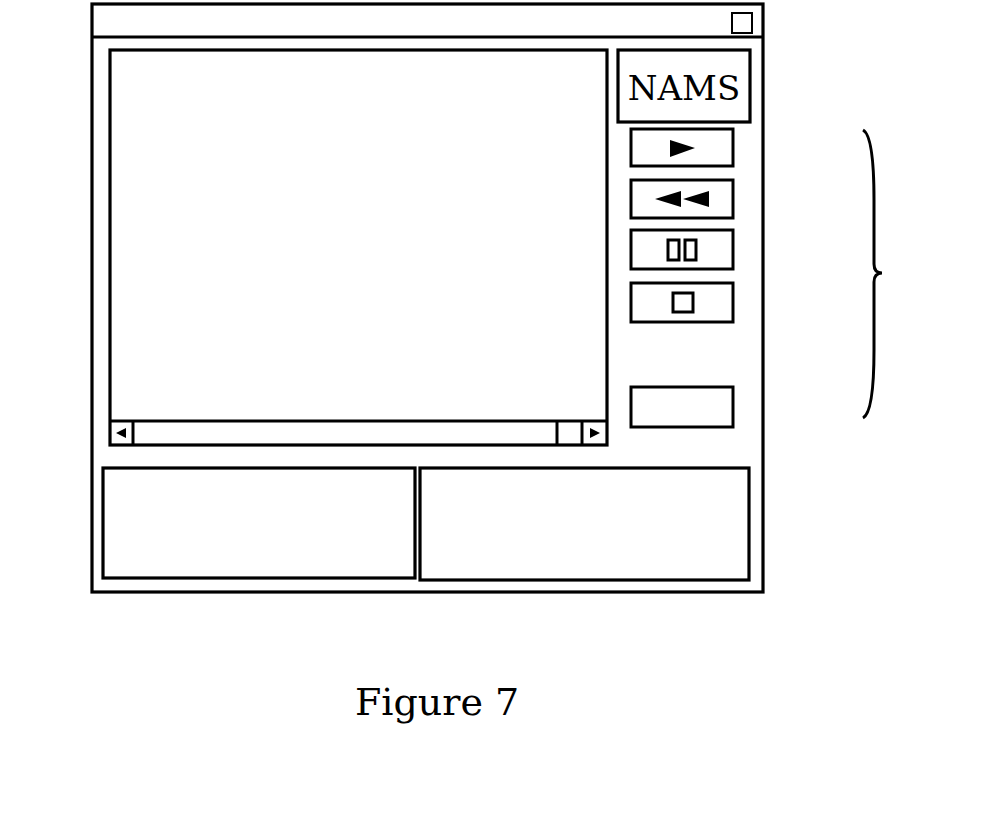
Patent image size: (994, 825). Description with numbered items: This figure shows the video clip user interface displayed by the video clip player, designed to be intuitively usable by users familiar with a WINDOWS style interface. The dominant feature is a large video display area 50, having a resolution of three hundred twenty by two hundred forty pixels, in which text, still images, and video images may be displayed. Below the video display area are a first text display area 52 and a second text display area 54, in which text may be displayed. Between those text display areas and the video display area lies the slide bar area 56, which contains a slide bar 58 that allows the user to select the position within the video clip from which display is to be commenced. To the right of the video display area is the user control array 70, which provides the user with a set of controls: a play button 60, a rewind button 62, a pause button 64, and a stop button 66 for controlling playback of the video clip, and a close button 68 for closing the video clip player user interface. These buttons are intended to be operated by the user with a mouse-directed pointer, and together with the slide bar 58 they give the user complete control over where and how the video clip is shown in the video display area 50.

The video display area 50 is at (358, 247).
The first text display area 52 is at (259, 523).
The second text display area 54 is at (584, 524).
The slide bar area 56 is at (392, 298).
The slide bar 58 is at (358, 395).
The play button 60 is at (780, 148).
The rewind button 62 is at (780, 199).
The pause button 64 is at (780, 250).
The stop button 66 is at (780, 302).
The close button 68 is at (780, 407).
The user control array 70 is at (892, 274).